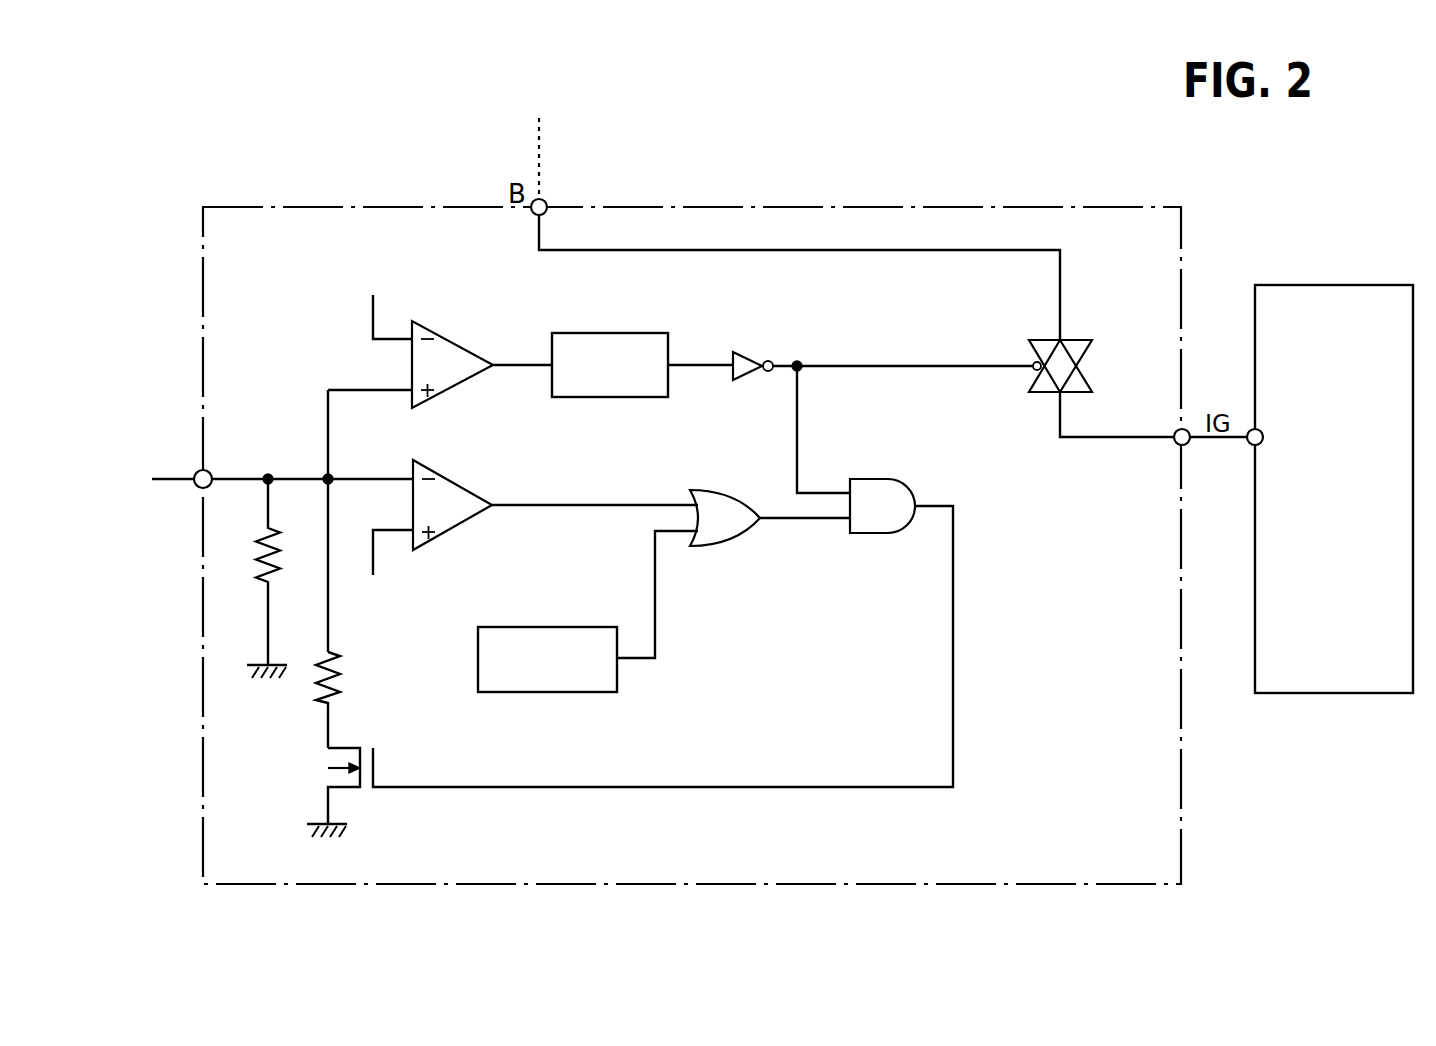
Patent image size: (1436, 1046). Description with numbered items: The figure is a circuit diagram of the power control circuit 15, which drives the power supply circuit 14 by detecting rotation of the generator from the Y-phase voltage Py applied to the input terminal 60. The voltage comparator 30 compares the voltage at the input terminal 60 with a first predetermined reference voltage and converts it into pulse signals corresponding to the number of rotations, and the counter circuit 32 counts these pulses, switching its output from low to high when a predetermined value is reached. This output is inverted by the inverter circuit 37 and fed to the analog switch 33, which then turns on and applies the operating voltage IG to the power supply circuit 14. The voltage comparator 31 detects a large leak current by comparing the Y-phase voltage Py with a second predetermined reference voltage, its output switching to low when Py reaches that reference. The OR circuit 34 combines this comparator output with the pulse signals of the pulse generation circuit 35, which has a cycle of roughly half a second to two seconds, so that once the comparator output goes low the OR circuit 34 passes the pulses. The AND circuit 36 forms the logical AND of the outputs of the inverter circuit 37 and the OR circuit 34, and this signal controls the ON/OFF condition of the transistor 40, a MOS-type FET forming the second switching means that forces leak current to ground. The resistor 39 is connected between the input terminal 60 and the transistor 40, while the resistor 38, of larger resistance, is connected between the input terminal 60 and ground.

The power supply circuit 14 is at (1350, 285).
The power control circuit 15 is at (1137, 207).
The voltage comparator 30 is at (450, 340).
The voltage comparator 31 is at (453, 478).
The counter circuit 32 is at (647, 333).
The analog switch 33 is at (1078, 340).
The OR circuit 34 is at (703, 490).
The pulse generation circuit 35 is at (525, 627).
The AND circuit 36 is at (880, 479).
The inverter circuit 37 is at (745, 352).
The resistor 38 is at (255, 554).
The resistor 39 is at (313, 678).
The transistor 40 is at (367, 789).
The input terminal 60 is at (207, 474).